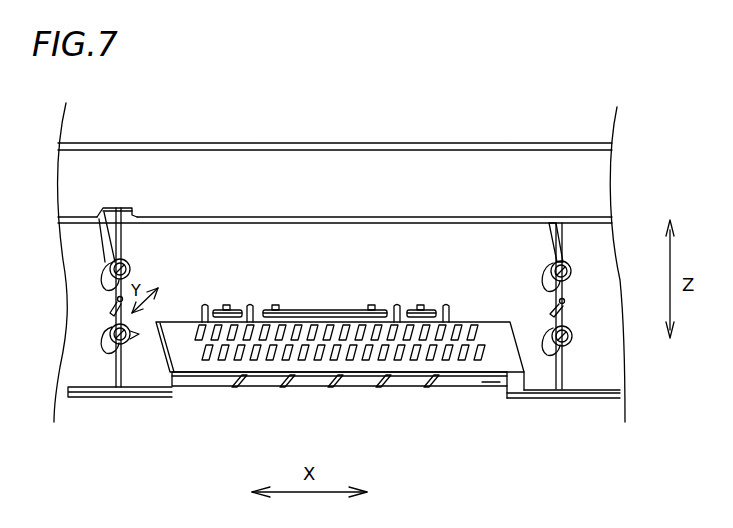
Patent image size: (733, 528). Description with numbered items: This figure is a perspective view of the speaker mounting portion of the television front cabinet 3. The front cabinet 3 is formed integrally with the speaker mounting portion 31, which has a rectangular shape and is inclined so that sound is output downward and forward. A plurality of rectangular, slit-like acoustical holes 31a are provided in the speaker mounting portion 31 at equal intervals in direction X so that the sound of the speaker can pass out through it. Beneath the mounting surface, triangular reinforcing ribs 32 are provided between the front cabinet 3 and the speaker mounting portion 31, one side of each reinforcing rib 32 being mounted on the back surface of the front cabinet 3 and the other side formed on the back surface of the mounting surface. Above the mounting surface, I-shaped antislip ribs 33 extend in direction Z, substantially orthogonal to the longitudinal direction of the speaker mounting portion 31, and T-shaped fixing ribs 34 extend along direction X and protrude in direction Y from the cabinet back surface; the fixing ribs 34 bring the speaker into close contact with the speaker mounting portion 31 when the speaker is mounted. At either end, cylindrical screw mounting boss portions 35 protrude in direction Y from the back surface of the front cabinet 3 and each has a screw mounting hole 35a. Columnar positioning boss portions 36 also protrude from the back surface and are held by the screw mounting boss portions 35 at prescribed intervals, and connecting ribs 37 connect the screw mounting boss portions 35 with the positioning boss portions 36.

The front cabinet 3 is at (472, 143).
The speaker mounting portion 31 is at (182, 340).
The acoustical hole 31a is at (490, 372).
The reinforcing rib 32 is at (238, 388).
The antislip rib 33 is at (202, 304).
The fixing rib 34 is at (221, 305).
The screw mounting boss portion 35 is at (127, 297).
The screw mounting hole 35a is at (95, 208).
The positioning boss portion 36 is at (117, 297).
The connecting rib 37 is at (337, 275).